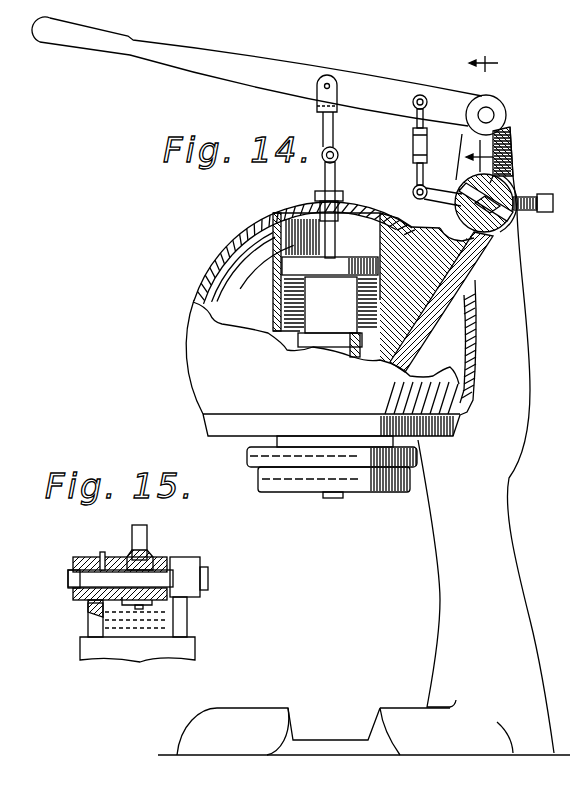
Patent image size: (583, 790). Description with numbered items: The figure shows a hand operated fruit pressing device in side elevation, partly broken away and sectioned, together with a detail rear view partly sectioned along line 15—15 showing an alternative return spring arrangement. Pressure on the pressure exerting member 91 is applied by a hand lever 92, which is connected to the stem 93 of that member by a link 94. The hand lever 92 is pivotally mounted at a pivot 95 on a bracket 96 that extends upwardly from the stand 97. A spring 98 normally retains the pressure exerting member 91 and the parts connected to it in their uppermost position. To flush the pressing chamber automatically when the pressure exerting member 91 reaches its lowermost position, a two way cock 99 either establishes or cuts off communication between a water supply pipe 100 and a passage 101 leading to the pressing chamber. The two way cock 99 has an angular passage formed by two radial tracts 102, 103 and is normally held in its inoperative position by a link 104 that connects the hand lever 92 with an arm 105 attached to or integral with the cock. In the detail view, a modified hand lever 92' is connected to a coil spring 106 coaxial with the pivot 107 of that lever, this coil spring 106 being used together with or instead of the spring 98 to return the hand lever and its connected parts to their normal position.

In FIG. 14, the section line 15 is at (467, 111).
In FIG. 14, the pressure exerting member 91 is at (317, 307).
In FIG. 14, the hand lever 92 is at (257, 71).
In FIG. 15, the hand lever 92' is at (165, 547).
In FIG. 14, the stem 93 is at (336, 181).
In FIG. 14, the link 94 is at (334, 130).
In FIG. 14, the pivot 95 is at (490, 111).
In FIG. 14, the bracket 96 is at (508, 125).
In FIG. 14, the stand 97 is at (498, 473).
In FIG. 14, the spring 98 is at (385, 353).
In FIG. 14, the two way cock 99 is at (502, 232).
In FIG. 14, the water supply pipe 100 is at (545, 194).
In FIG. 14, the passage 101 is at (470, 283).
In FIG. 14, the radial tract 102 is at (500, 178).
In FIG. 14, the radial tract 103 is at (455, 227).
In FIG. 14, the link 104 is at (414, 140).
In FIG. 14, the arm 105 is at (428, 190).
In FIG. 15, the coil spring 106 is at (105, 555).
In FIG. 15, the pivot 107 is at (70, 578).